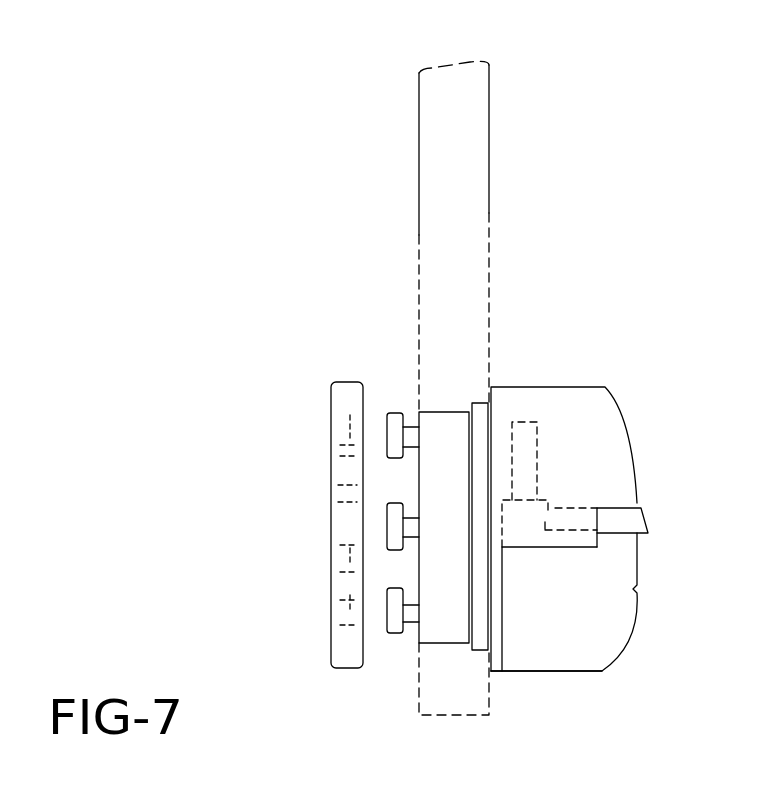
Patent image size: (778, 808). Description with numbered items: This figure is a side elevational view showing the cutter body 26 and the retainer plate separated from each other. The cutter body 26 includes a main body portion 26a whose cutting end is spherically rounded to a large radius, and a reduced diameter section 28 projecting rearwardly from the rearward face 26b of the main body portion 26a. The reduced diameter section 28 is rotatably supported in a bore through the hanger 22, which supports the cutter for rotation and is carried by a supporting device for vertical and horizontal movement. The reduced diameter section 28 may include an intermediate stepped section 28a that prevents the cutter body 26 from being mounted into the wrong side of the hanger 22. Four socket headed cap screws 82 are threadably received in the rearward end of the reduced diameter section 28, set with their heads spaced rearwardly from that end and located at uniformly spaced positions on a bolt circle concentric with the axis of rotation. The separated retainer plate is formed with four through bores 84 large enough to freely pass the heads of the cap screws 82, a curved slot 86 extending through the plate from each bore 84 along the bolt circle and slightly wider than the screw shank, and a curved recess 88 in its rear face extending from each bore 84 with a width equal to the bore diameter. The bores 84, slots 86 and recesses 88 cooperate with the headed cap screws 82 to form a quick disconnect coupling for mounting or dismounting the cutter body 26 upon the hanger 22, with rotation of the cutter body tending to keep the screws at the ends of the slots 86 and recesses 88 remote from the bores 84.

The hanger 22 is at (430, 101).
The cutter body 26 is at (597, 300).
The main body portion 26a is at (580, 606).
The rearward face 26b is at (486, 657).
The reduced diameter section 28 is at (440, 420).
The intermediate stepped section 28a is at (470, 650).
The socket headed cap screws 82 is at (388, 412).
The through bores 84 is at (333, 413).
The curved slot 86 is at (357, 547).
The curved recess 88 is at (337, 565).